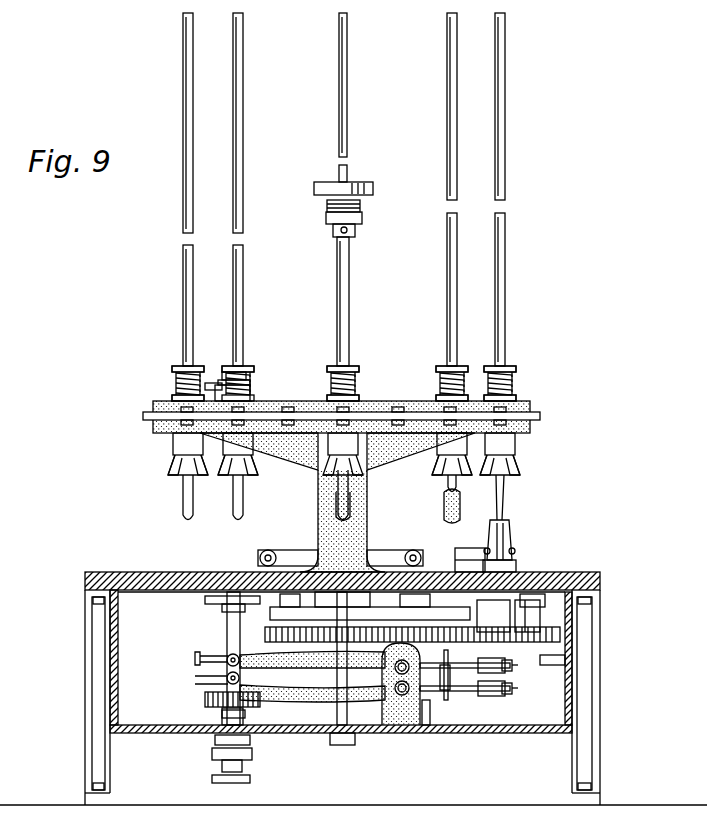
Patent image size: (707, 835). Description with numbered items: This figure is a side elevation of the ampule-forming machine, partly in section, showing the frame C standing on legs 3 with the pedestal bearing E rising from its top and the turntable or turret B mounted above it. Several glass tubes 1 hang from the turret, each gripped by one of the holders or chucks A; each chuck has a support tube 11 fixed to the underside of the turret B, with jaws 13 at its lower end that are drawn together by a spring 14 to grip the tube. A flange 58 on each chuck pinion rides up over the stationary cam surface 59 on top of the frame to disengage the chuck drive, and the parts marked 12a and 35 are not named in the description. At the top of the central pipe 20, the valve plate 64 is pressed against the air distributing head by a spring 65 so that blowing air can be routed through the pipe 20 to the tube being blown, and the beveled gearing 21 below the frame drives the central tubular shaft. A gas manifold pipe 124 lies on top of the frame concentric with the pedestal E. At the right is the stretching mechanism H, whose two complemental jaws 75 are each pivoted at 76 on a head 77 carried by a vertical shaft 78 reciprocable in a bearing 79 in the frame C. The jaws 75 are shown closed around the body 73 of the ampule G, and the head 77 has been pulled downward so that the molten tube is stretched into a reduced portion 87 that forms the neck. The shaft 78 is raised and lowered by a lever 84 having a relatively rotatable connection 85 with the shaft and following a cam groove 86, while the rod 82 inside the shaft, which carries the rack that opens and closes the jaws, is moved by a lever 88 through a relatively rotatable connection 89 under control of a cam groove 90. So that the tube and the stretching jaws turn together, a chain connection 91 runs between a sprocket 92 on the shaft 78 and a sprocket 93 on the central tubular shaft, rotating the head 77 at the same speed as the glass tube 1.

The glass tube 1 is at (183, 296).
The legs 3 is at (95, 640).
The support tube 11 is at (172, 446).
The collar 12a is at (176, 368).
The jaws 13 is at (183, 478).
The spring 14 is at (178, 384).
The pipe 20 is at (338, 290).
The beveled gearing 21 is at (265, 642).
The bracket 35 is at (465, 572).
The flange 58 is at (172, 397).
The stationary cam surface 59 is at (214, 376).
The valve plate 64 is at (374, 190).
The spring 65 is at (362, 207).
The body of the ampule 73 is at (330, 508).
The complemental jaws 75 is at (516, 520).
The pivot 76 is at (520, 534).
The head 77 is at (514, 550).
The vertical shaft 78 is at (515, 557).
The bearing 79 is at (552, 592).
The rod 82 is at (452, 692).
The lever 84 is at (425, 725).
The relatively rotatable connection 85 is at (514, 665).
The cam groove 86 is at (196, 656).
The reduced portion 87 is at (502, 500).
The lever 88 is at (420, 725).
The relatively rotatable connection 89 is at (514, 692).
The cam groove 90 is at (218, 685).
The chain connection 91 is at (470, 640).
The sprocket 92 is at (512, 628).
The sprocket 93 is at (268, 562).
The manifold pipe 124 is at (404, 552).
The holders or chucks A is at (168, 466).
The turntable or turret B is at (532, 404).
The frame C is at (172, 572).
The pedestal bearing E is at (318, 526).
The ampule G is at (330, 498).
The stretching mechanism H is at (514, 530).